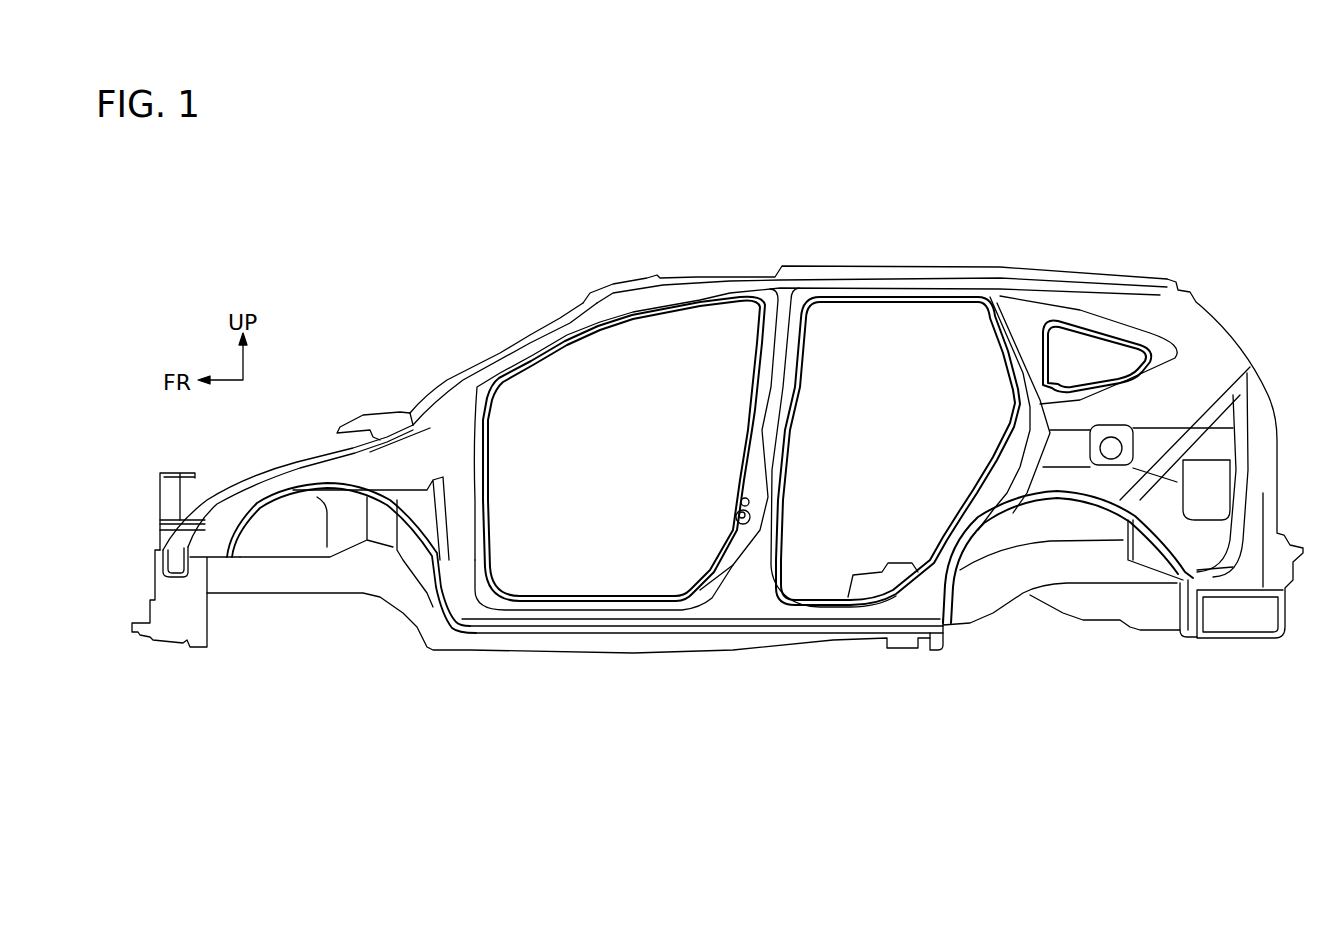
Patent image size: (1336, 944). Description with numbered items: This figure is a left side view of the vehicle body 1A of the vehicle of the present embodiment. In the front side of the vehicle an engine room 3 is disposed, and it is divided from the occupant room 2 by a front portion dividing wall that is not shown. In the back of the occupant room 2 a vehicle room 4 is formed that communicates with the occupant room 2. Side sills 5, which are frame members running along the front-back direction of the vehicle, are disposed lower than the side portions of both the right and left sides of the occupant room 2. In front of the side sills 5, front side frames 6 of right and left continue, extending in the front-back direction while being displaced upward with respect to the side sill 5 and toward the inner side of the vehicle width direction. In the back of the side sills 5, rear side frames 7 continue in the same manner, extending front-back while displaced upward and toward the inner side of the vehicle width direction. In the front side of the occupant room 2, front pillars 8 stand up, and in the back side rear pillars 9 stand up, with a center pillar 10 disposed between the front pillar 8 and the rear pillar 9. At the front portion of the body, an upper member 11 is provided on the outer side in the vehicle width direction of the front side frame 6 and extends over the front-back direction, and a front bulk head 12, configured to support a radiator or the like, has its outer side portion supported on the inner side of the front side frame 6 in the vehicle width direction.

The vehicle body 1A is at (496, 225).
The occupant room 2 is at (686, 394).
The engine room 3 is at (293, 522).
The vehicle room 4 is at (1108, 358).
The side sill 5 is at (622, 623).
The front side frame 6 is at (337, 570).
The rear side frame 7 is at (1077, 567).
The front pillar 8 is at (512, 352).
The rear pillar 9 is at (1030, 362).
The center pillar 10 is at (785, 394).
The upper member 11 is at (262, 482).
The front bulk head 12 is at (172, 501).